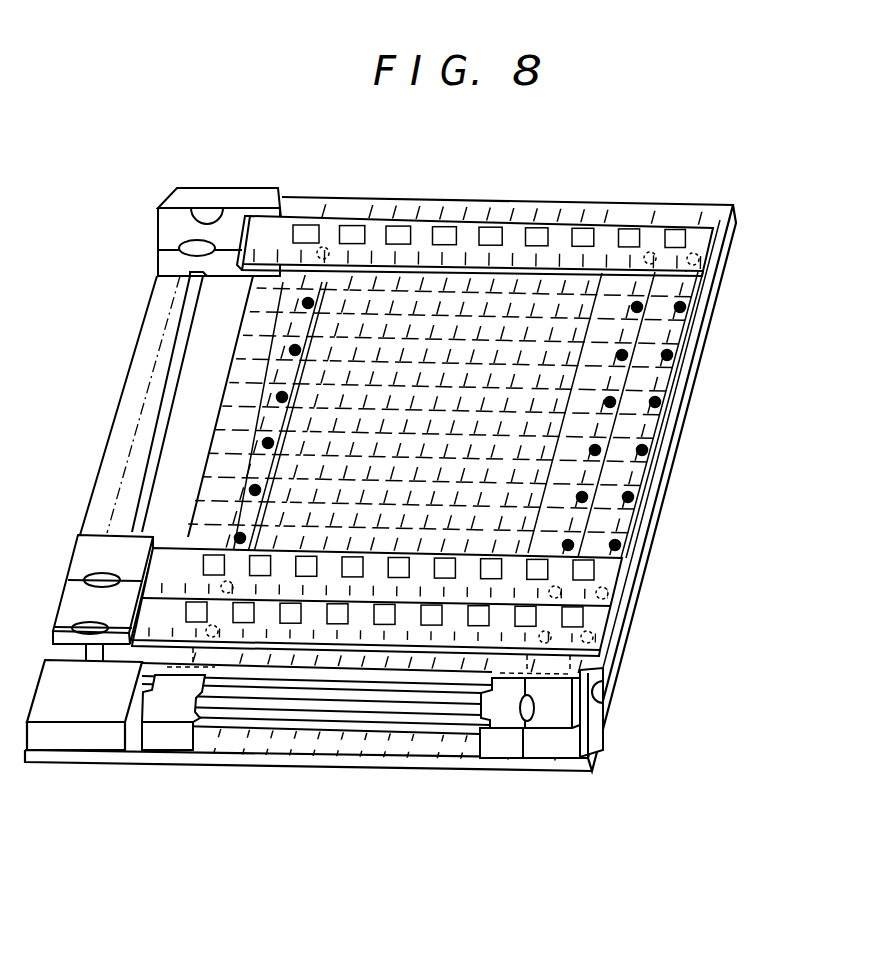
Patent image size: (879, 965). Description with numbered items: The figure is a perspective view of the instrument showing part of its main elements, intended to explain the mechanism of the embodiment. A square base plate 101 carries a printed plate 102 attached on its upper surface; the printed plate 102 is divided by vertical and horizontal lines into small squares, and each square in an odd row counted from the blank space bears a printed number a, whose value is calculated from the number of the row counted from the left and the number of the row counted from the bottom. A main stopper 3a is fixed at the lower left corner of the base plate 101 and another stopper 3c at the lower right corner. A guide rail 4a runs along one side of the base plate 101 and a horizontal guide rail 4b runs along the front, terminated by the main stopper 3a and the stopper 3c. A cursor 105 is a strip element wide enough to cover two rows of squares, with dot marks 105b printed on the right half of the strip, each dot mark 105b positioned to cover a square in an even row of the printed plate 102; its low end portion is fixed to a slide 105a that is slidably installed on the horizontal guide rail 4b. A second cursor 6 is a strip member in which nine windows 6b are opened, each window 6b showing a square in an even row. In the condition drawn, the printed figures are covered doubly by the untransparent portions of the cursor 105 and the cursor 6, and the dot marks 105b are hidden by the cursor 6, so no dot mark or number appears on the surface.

The square base plate 101 is at (348, 762).
The printed plate 102 is at (540, 307).
The cursor 6 is at (297, 215).
The windows 6b is at (483, 224).
The number a is at (697, 229).
The dot marks 105b is at (672, 356).
The guide rail 4a is at (153, 417).
The guide rail 4b is at (300, 712).
The main stopper 3a is at (83, 710).
The stopper 3c is at (590, 710).
The slide 105a is at (167, 737).
The cursor 105 is at (572, 671).